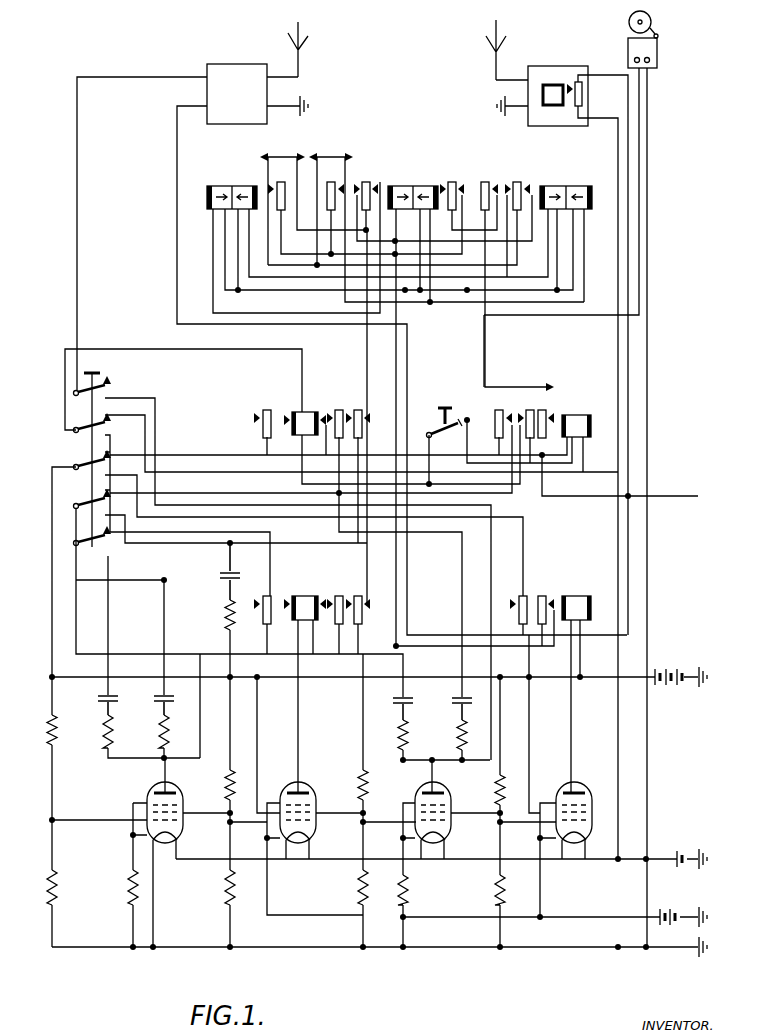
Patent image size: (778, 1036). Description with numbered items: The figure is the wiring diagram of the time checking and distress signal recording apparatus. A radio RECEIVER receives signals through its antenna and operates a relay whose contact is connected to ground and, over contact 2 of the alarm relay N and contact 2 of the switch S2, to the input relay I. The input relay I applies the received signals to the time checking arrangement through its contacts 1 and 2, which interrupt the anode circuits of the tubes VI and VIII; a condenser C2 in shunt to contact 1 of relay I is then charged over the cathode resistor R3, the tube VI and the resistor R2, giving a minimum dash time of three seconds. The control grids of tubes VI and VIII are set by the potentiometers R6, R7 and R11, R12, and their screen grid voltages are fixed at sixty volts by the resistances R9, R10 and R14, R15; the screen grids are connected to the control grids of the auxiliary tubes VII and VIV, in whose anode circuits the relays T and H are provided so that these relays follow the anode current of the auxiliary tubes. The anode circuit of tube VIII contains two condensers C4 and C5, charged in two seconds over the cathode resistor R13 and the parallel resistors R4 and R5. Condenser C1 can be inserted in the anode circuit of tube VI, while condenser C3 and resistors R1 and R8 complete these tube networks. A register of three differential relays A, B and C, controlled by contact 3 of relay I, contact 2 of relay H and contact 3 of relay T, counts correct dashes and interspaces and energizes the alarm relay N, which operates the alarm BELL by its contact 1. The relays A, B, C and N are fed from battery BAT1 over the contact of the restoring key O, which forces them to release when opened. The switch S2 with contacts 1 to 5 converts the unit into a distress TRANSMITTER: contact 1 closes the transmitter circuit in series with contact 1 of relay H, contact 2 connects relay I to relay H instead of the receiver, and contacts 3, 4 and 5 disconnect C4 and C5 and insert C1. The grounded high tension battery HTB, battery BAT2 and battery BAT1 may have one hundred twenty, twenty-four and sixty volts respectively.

The transmitter TRANSMITTER is at (246, 73).
The radio receiver RECEIVER is at (557, 439).
The alarm BELL is at (571, 479).
The registering relay A is at (236, 188).
The registering relay B is at (418, 188).
The registering relay C is at (578, 188).
The contact 1 is at (525, 597).
The contact 2 is at (544, 597).
The contact 3 is at (360, 597).
The contact 4 is at (120, 511).
The contact 5 is at (121, 553).
The switch S2 is at (94, 378).
The input relay I is at (296, 410).
The switch O is at (447, 408).
The alarm relay N is at (580, 412).
The relay T is at (303, 596).
The relay H is at (580, 596).
The condenser C1 is at (100, 702).
The condenser C2 is at (158, 702).
The capacitor C3 is at (226, 574).
The condenser C4 is at (396, 704).
The condenser C5 is at (454, 704).
The resistor R1 is at (118, 740).
The resistor R2 is at (176, 732).
The cathode resistor R3 is at (226, 628).
The resistor R4 is at (412, 726).
The resistor R5 is at (472, 726).
The potentiometer R6 is at (44, 736).
The potentiometer R7 is at (58, 886).
The resistor R8 is at (128, 874).
The potentiometer resistance R9 is at (226, 782).
The potentiometer resistance R10 is at (224, 902).
The potentiometer R11 is at (358, 776).
The potentiometer R12 is at (356, 884).
The cathode resistor R13 is at (408, 896).
The potentiometer resistance R14 is at (496, 778).
The potentiometer resistance R15 is at (494, 888).
The tube VI is at (184, 826).
The tube VII is at (317, 826).
The tube VIII is at (452, 826).
The tube VIV is at (593, 826).
The high tension battery HTB is at (672, 670).
The battery BAT1 is at (441, 853).
The battery BAT2 is at (660, 916).